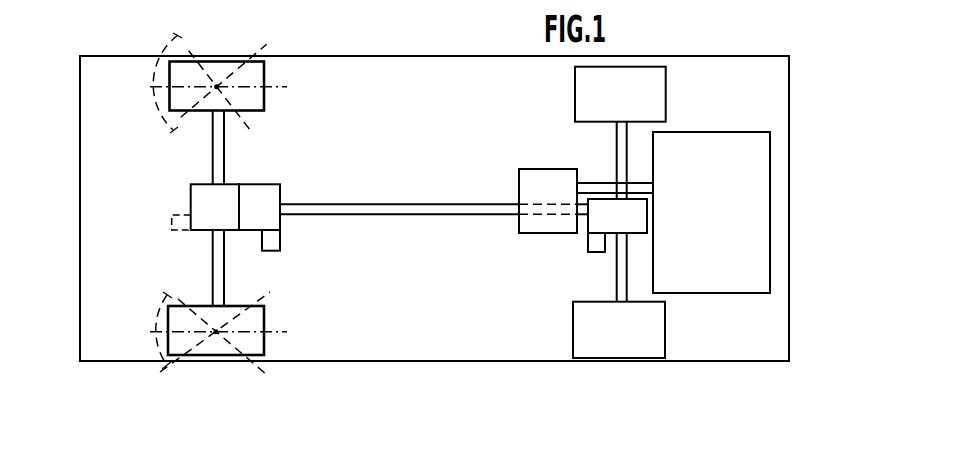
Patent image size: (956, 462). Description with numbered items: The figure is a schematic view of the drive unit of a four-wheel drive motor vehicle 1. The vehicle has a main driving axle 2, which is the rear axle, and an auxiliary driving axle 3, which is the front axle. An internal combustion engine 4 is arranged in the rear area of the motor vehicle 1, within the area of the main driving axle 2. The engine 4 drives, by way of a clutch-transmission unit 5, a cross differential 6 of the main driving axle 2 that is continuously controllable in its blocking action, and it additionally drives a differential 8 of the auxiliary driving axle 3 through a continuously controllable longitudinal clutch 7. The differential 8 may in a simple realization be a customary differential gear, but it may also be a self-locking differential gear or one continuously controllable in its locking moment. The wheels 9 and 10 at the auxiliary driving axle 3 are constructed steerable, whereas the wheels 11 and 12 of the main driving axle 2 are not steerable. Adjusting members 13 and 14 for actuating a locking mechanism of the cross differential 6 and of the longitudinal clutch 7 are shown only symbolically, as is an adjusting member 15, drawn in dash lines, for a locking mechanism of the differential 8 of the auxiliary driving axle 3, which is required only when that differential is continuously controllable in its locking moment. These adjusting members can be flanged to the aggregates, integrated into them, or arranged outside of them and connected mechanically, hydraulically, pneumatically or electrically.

The motor vehicle 1 is at (371, 56).
The main driving axle 2 is at (597, 147).
The auxiliary driving axle 3 is at (241, 137).
The internal combustion engine 4 is at (718, 131).
The clutch-transmission unit 5 is at (534, 169).
The cross differential 6 is at (590, 222).
The longitudinal clutch 7 is at (268, 184).
The differential 8 is at (198, 184).
The wheel 9 is at (264, 322).
The wheel 10 is at (264, 72).
The wheel 11 is at (573, 332).
The wheel 12 is at (575, 93).
The adjusting member 13 is at (598, 252).
The adjusting member 14 is at (271, 244).
The adjusting member 15 is at (182, 232).